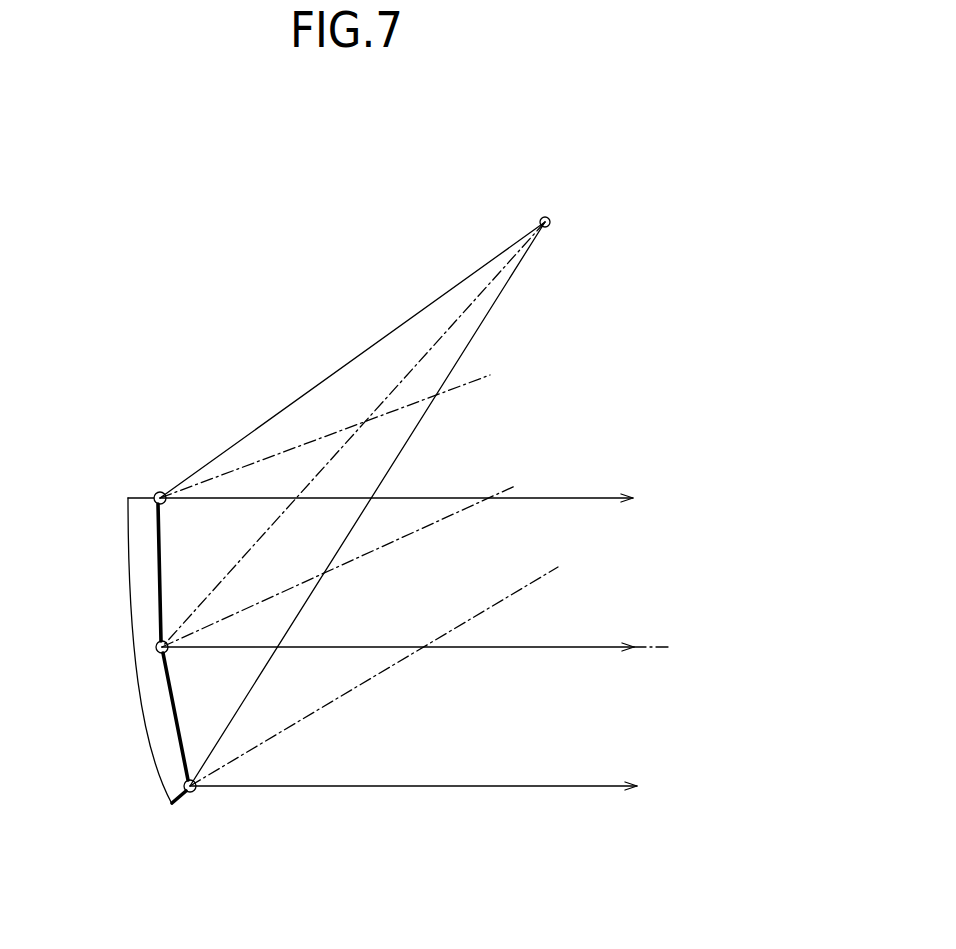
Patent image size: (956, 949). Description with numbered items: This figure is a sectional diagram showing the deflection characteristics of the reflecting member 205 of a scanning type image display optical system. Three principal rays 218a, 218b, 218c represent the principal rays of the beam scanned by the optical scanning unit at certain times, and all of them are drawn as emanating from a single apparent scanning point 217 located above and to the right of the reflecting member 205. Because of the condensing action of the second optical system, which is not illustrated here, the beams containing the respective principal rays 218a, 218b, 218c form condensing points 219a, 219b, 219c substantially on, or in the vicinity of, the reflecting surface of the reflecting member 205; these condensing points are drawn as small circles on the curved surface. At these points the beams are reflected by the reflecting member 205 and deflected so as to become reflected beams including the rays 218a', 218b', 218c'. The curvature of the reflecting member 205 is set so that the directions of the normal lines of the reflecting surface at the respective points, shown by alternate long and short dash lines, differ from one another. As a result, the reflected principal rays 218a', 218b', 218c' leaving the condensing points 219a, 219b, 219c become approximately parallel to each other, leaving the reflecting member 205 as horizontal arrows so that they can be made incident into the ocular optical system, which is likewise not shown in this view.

The reflecting member 205 is at (128, 562).
The apparent scanning point 217 is at (549, 217).
The principal ray 218a is at (353, 434).
The principal ray 218b is at (352, 360).
The principal ray 218c is at (396, 504).
The reflected ray 218a' is at (431, 682).
The reflected ray 218b' is at (420, 531).
The reflected ray 218c' is at (438, 818).
The condensing point 219a is at (158, 651).
The condensing point 219b is at (156, 489).
The condensing point 219c is at (196, 798).